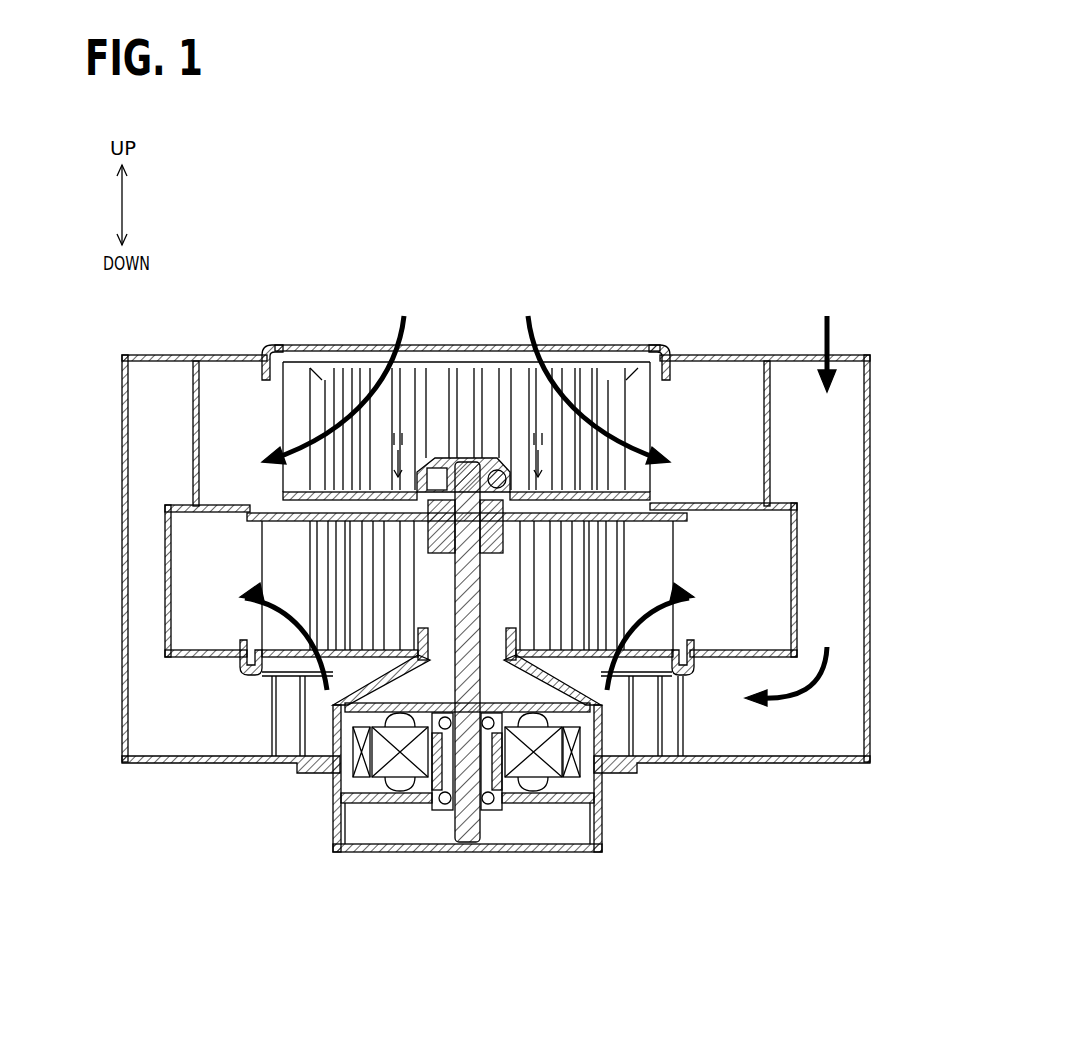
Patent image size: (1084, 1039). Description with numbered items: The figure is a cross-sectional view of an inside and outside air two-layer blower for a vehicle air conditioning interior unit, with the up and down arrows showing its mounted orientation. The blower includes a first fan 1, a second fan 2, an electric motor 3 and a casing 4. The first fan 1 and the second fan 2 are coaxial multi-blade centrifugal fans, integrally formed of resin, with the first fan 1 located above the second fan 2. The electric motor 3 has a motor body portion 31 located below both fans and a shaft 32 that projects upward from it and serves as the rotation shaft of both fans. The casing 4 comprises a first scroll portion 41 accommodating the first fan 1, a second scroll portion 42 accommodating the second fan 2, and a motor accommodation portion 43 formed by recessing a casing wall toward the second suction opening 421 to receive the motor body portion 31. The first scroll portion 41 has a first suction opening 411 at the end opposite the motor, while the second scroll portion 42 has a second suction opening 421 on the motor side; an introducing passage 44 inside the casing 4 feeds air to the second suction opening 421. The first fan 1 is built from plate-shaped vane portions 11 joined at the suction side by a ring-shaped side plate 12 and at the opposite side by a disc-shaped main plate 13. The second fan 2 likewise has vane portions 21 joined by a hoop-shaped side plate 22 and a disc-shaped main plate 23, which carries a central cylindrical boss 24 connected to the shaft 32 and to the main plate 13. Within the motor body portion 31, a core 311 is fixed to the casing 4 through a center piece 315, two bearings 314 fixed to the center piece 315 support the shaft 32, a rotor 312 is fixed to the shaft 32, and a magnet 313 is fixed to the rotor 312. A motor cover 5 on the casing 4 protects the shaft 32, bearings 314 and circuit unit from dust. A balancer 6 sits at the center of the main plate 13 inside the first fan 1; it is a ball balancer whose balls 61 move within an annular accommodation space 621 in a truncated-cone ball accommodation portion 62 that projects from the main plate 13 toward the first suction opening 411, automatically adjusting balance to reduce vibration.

The first fan 1 is at (273, 415).
The vane portions 11 is at (627, 417).
The side plate 12 is at (668, 350).
The main plate 13 is at (627, 487).
The second fan 2 is at (258, 562).
The vane portions 21 is at (657, 578).
The side plate 22 is at (678, 677).
The main plate 23 is at (643, 519).
The boss 24 is at (447, 538).
The electric motor 3 is at (360, 808).
The motor body portion 31 is at (498, 840).
The core 311 is at (530, 768).
The rotor 312 is at (623, 820).
The magnet 313 is at (567, 760).
The bearings 314 is at (440, 805).
The center piece 315 is at (395, 803).
The shaft 32 is at (470, 577).
The casing 4 is at (120, 658).
The first scroll portion 41 is at (193, 467).
The first suction opening 411 is at (422, 347).
The second scroll portion 42 is at (165, 620).
The second suction opening 421 is at (290, 673).
The motor accommodation portion 43 is at (333, 718).
The introducing passage 44 is at (770, 720).
The motor cover 5 is at (330, 808).
The balancer 6 is at (464, 342).
The balls 61 is at (497, 470).
The ball accommodation portion 62 is at (472, 452).
The accommodation space 621 is at (445, 470).